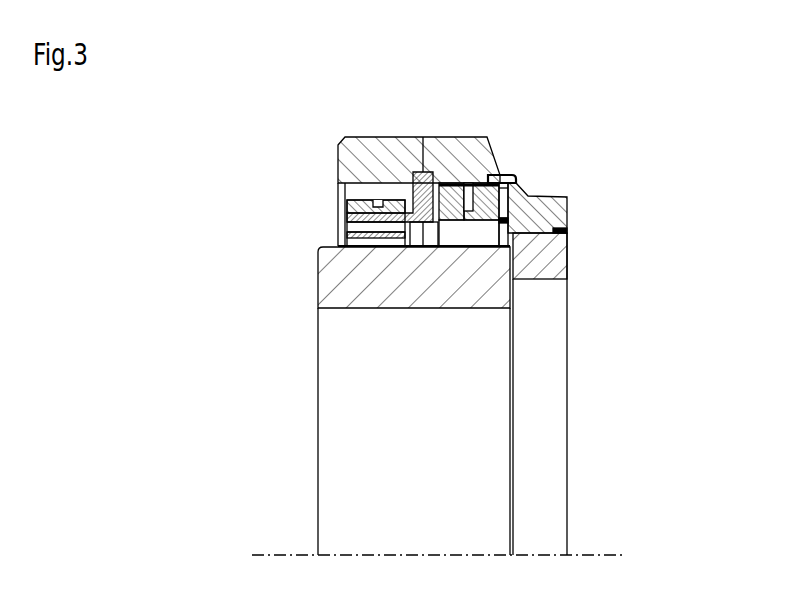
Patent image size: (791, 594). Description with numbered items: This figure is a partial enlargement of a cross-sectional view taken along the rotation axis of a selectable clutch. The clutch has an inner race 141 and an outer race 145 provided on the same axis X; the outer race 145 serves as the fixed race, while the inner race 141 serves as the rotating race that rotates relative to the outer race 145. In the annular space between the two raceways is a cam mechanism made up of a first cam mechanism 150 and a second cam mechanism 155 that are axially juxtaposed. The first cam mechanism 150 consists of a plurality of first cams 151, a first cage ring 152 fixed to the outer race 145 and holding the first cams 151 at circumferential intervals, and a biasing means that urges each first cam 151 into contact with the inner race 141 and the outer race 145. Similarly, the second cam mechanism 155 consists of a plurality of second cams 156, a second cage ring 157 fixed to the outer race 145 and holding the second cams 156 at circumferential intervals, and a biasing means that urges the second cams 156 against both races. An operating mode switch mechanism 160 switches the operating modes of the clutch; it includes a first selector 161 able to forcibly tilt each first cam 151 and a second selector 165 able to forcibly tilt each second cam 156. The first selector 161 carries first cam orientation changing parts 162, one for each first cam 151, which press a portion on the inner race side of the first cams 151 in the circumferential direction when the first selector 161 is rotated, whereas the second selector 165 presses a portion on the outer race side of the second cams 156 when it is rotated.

The inner race 141 is at (318, 288).
The outer race 145 is at (338, 173).
The first cam mechanism 150 is at (371, 141).
The first cams 151 is at (362, 202).
The first cage ring 152 is at (412, 194).
The second cam mechanism 155 is at (465, 141).
The second cams 156 is at (482, 185).
The second cage ring 157 is at (440, 185).
The operating mode switch mechanism 160 is at (629, 369).
The first selector 161 is at (567, 207).
The first cam orientation changing parts 162 is at (505, 176).
The second selector 165 is at (567, 258).
The axis X is at (278, 555).